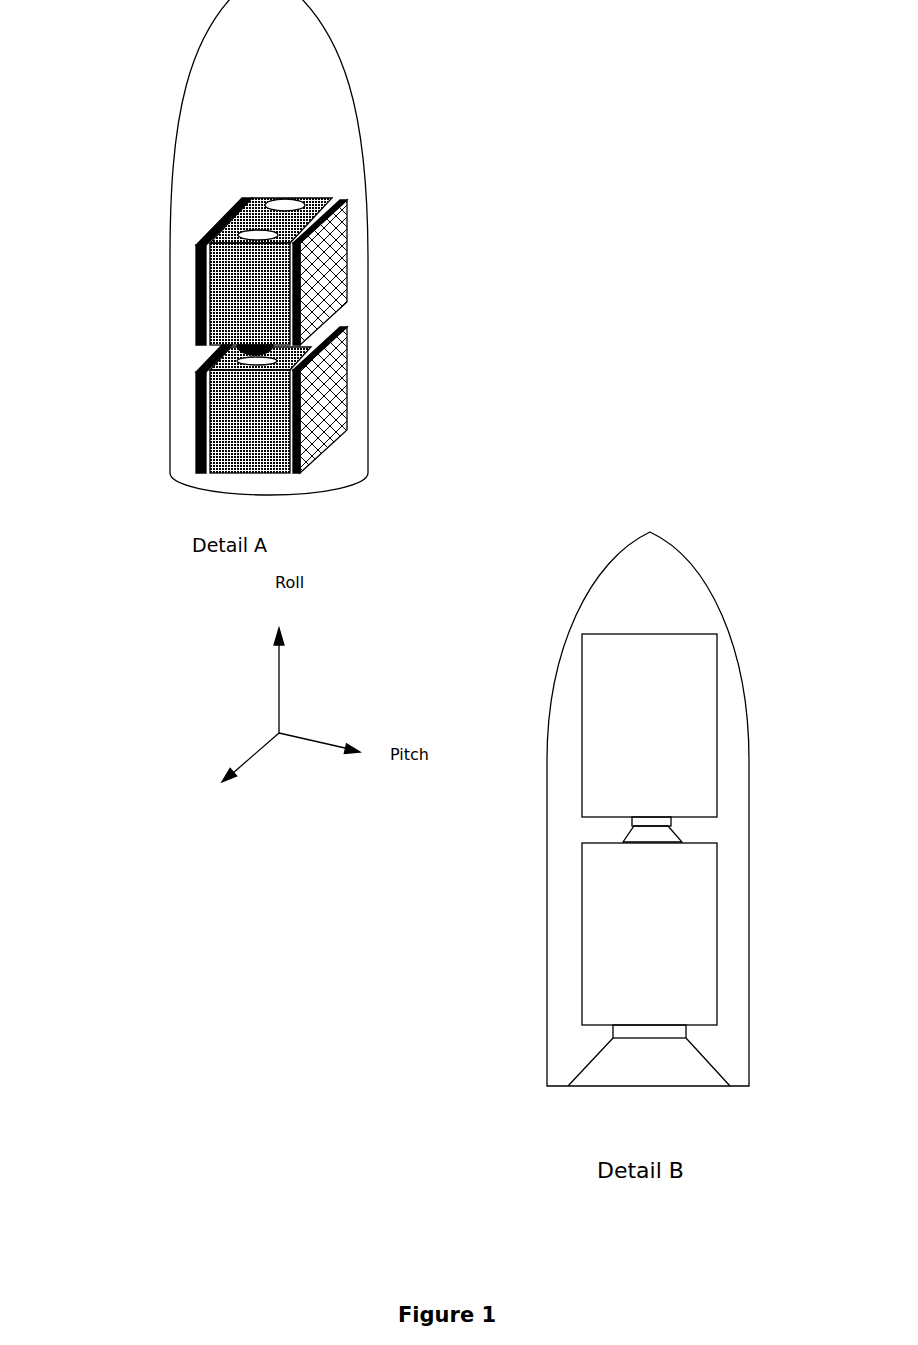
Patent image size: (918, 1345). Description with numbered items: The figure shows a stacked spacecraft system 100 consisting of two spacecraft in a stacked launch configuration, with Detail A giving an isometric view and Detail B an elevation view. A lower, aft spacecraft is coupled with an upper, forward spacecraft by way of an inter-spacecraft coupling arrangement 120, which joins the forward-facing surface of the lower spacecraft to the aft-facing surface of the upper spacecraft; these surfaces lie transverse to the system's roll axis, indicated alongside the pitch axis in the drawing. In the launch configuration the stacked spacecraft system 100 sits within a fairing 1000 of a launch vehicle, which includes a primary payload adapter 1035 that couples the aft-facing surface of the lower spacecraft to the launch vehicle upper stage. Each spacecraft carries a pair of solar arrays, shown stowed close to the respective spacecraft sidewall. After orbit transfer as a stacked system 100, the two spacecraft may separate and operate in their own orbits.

The stacked spacecraft system 100 is at (145, 142).
The fairing 1000 is at (343, 76).
The inter-spacecraft coupling arrangement 120 is at (758, 817).
The primary payload adapter 1035 is at (700, 1050).